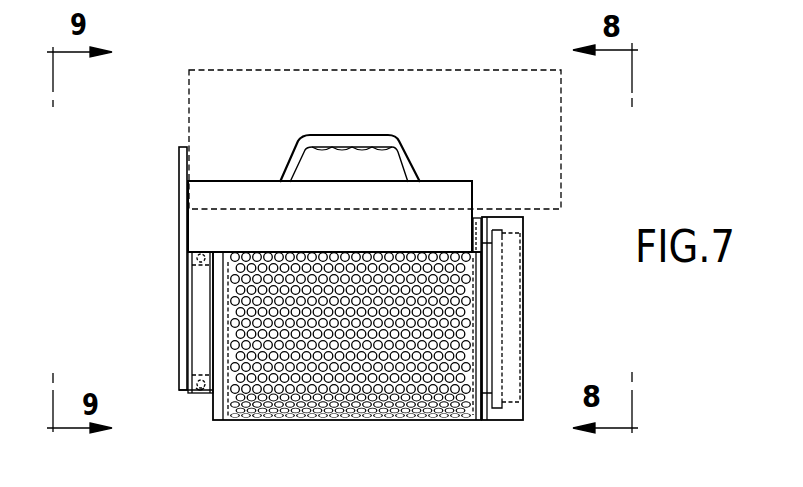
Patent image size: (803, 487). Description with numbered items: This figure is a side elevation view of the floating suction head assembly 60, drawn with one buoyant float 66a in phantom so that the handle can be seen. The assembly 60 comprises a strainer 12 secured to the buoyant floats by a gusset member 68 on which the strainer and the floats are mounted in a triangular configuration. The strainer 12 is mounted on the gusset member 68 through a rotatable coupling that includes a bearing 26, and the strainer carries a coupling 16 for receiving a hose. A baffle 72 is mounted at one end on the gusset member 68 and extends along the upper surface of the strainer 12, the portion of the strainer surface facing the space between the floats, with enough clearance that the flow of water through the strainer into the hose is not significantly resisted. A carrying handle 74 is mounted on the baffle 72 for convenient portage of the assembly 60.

The strainer 12 is at (290, 422).
The coupling 16 is at (510, 337).
The bearing 26 is at (205, 395).
The floating suction head assembly 60 is at (140, 182).
The buoyant float 66a is at (508, 82).
The gusset member 68 is at (188, 270).
The baffle 72 is at (245, 200).
The carrying handle 74 is at (408, 150).